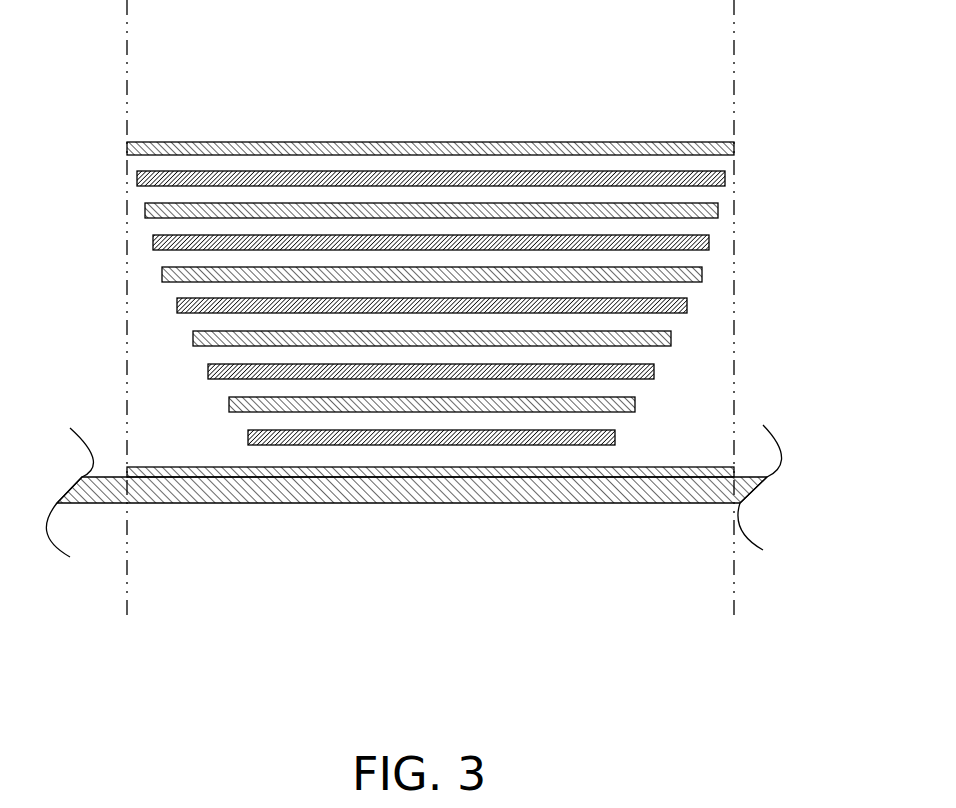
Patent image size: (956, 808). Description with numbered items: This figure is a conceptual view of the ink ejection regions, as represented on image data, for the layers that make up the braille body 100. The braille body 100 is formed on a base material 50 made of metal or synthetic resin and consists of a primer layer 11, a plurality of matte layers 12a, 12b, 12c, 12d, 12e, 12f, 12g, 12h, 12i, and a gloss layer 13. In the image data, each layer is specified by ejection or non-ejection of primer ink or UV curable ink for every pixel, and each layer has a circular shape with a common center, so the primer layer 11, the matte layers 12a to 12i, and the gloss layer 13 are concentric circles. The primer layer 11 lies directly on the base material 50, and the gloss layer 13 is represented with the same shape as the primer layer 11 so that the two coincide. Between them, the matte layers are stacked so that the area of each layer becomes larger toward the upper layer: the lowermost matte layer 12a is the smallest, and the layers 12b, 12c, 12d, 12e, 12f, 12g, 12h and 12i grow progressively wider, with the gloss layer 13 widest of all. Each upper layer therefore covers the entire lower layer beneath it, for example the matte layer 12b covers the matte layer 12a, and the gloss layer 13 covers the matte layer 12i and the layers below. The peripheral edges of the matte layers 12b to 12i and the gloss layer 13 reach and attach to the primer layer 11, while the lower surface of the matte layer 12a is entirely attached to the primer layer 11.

The braille body 100 is at (610, 74).
The gloss layer 13 is at (667, 142).
The matte layer 12i is at (725, 180).
The matte layer 12h is at (718, 213).
The matte layer 12g is at (709, 247).
The matte layer 12f is at (702, 271).
The matte layer 12e is at (687, 302).
The matte layer 12d is at (671, 338).
The matte layer 12c is at (654, 368).
The matte layer 12b is at (635, 403).
The matte layer 12a is at (615, 442).
The base material 50 is at (568, 490).
The primer layer 11 is at (453, 472).